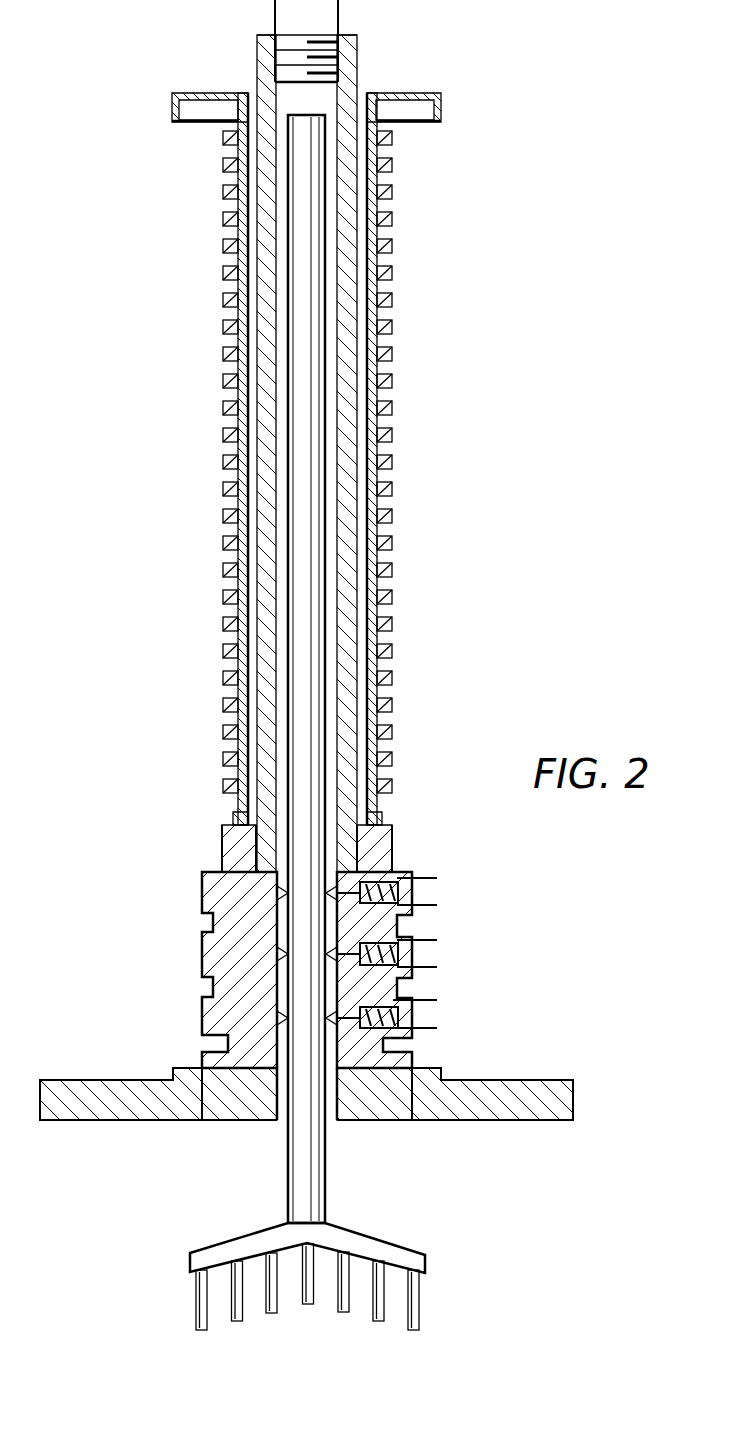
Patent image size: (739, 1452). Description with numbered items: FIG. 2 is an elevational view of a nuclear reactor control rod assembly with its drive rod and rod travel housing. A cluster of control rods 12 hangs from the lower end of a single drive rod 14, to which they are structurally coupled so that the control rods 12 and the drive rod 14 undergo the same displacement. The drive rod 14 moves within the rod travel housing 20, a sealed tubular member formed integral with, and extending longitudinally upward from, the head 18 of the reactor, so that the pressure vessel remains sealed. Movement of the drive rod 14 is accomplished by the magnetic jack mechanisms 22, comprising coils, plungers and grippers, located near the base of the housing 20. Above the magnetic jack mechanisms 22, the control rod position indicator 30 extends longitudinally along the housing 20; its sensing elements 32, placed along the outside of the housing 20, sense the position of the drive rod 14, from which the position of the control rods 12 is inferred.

The control rods 12 is at (234, 1308).
The drive rod 14 is at (298, 257).
The head of the reactor 18 is at (538, 1080).
The rod travel housing 20 is at (360, 58).
The magnetic jack mechanisms 22 is at (447, 873).
The control rod position indicator 30 is at (446, 263).
The sensing elements 32 is at (390, 220).